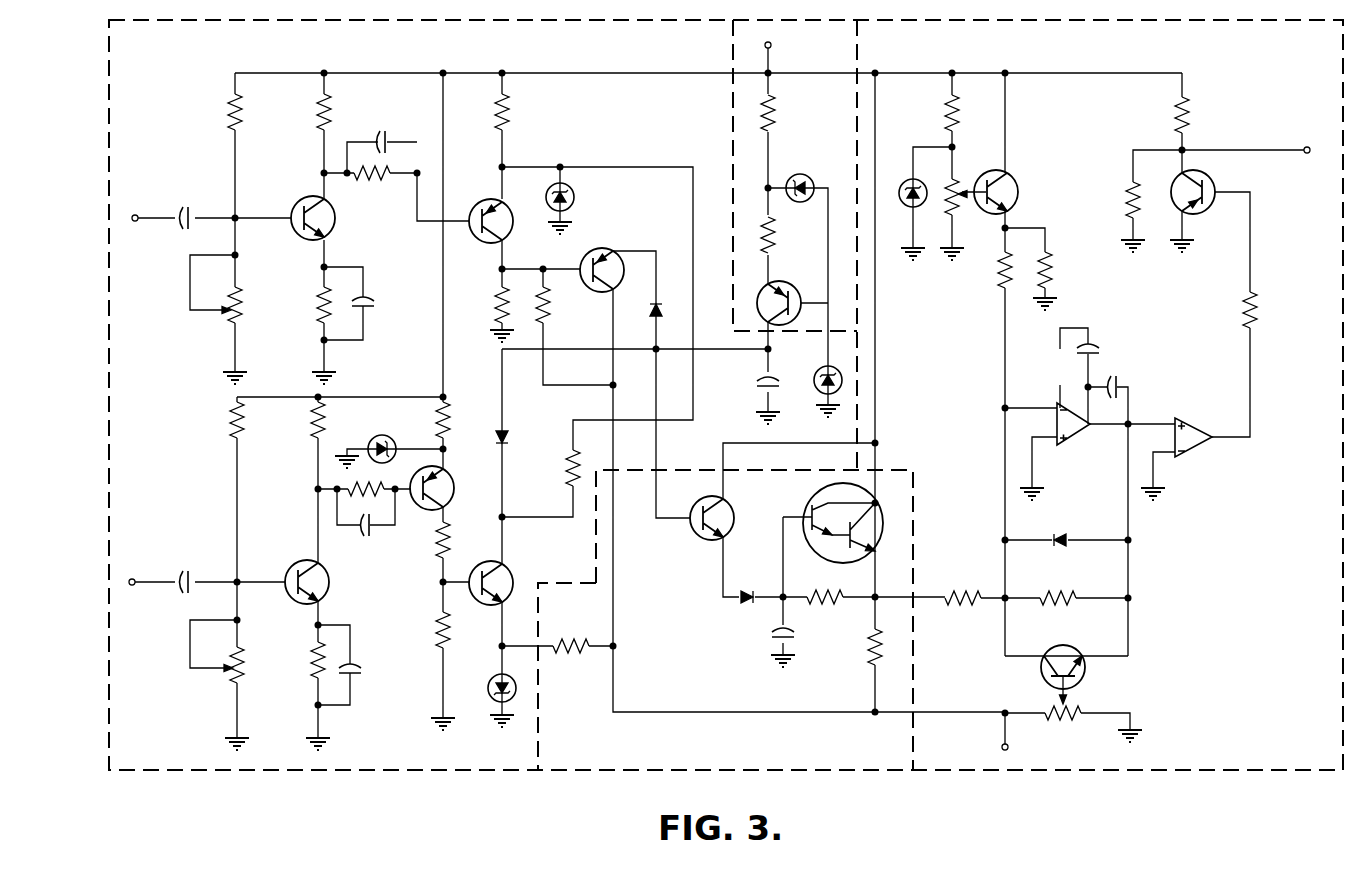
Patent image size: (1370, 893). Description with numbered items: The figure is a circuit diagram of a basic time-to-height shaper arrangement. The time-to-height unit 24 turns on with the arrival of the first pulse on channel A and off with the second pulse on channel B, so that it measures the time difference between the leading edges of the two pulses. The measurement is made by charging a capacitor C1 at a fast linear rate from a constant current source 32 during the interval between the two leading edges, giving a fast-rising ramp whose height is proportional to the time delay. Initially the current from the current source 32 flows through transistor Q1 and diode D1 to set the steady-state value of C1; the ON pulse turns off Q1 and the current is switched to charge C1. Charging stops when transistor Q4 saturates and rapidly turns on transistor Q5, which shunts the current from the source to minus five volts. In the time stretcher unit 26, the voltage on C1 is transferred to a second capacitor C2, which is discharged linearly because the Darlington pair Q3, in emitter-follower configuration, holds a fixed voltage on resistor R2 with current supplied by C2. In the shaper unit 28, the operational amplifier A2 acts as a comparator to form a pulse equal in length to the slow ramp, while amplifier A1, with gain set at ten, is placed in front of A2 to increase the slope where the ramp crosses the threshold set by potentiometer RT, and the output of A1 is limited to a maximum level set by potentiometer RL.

The time-to-height unit 24 is at (726, 395).
The constant current source 32 is at (801, 244).
The time stretcher unit 26 is at (741, 605).
The shaper unit 28 is at (1119, 406).
The transistor Q1 is at (613, 270).
The diode D1 is at (672, 311).
The transistor Q4 is at (446, 488).
The transistor Q5 is at (504, 582).
The Darlington pair Q3 is at (834, 529).
The capacitor C1 is at (753, 381).
The second capacitor C2 is at (768, 633).
The resistor R2 is at (825, 608).
The potentiometer RT is at (965, 208).
The potentiometer RL is at (1063, 723).
The amplifier A1 is at (1077, 429).
The operational amplifier A2 is at (1198, 443).